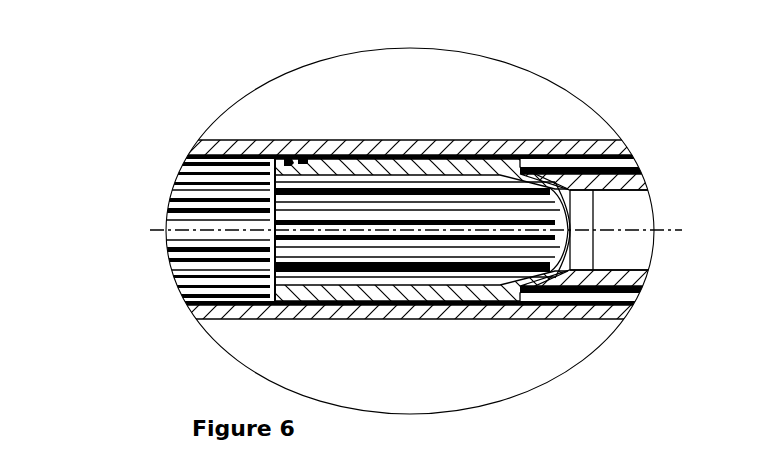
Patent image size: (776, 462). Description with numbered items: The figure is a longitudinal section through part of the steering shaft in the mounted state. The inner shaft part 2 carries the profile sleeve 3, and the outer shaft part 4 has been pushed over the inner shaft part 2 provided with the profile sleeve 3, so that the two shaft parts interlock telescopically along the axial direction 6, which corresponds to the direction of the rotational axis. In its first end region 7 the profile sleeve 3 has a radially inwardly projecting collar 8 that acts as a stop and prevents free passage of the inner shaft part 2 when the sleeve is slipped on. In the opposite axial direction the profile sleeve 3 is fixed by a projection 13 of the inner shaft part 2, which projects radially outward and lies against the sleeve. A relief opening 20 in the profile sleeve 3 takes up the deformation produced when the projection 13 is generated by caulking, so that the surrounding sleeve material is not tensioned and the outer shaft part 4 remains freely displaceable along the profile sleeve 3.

The inner shaft part 2 is at (465, 170).
The profile sleeve 3 is at (420, 152).
The outer shaft part 4 is at (557, 152).
The axial direction 6 is at (676, 228).
The first end region 7 is at (273, 157).
The radially inwardly projecting collar 8 is at (255, 140).
The projection 13 is at (290, 158).
The relief opening 20 is at (305, 157).